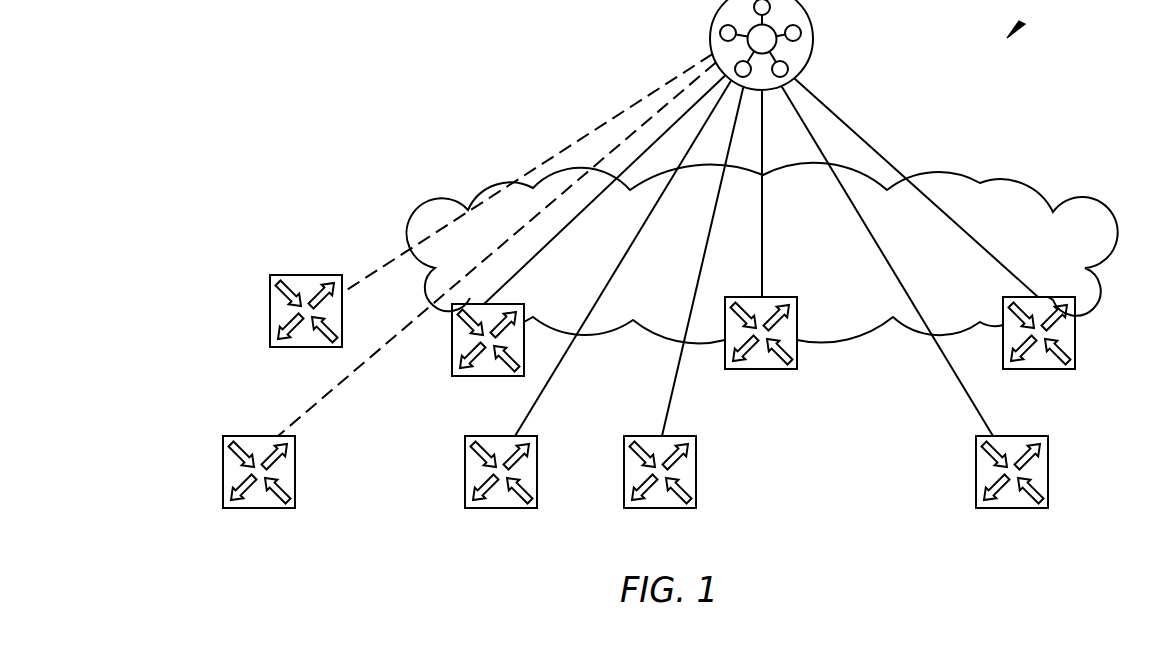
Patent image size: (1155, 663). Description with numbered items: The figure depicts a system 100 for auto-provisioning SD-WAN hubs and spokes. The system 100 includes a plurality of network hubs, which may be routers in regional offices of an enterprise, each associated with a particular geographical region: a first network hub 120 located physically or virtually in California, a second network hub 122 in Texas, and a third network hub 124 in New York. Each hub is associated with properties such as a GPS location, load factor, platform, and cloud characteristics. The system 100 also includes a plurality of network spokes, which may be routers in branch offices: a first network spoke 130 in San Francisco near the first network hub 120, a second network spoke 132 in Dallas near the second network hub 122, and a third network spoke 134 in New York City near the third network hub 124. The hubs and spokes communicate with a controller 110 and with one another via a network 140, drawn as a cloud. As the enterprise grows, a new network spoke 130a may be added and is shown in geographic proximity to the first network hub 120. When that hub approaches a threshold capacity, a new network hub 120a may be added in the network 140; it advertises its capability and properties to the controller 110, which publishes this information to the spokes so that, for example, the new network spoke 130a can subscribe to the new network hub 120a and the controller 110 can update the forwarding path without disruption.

The system 100 is at (1024, 22).
The controller 110 is at (813, 45).
The new network hub 120a is at (270, 299).
The first network hub 120 is at (452, 356).
The second network hub 122 is at (797, 315).
The third network hub 124 is at (1075, 335).
The new network spoke 130a is at (296, 470).
The first network spoke 130 is at (465, 460).
The second network spoke 132 is at (697, 470).
The third network spoke 134 is at (976, 467).
The network 140 is at (1023, 183).